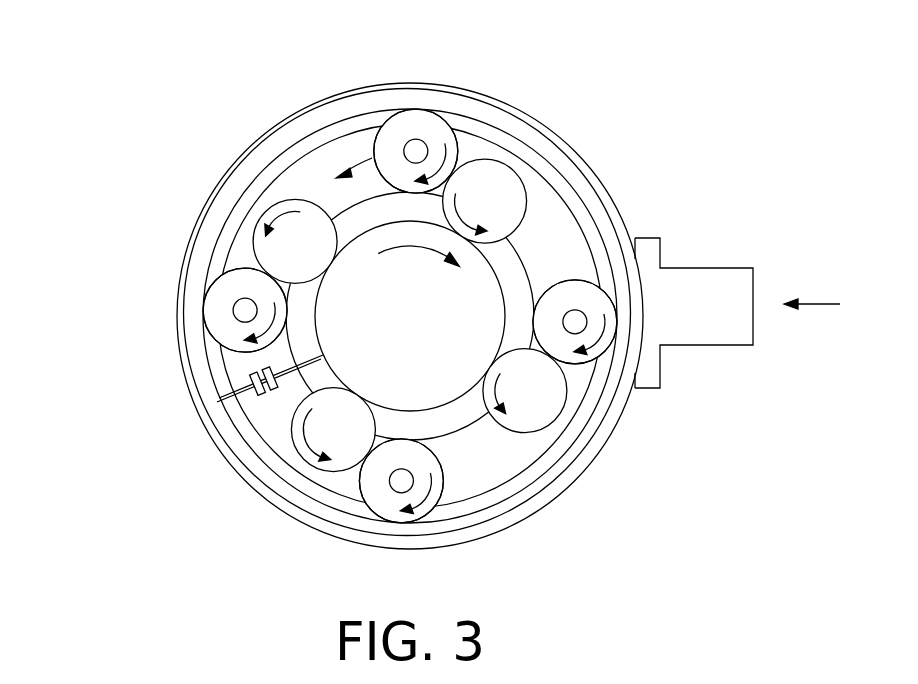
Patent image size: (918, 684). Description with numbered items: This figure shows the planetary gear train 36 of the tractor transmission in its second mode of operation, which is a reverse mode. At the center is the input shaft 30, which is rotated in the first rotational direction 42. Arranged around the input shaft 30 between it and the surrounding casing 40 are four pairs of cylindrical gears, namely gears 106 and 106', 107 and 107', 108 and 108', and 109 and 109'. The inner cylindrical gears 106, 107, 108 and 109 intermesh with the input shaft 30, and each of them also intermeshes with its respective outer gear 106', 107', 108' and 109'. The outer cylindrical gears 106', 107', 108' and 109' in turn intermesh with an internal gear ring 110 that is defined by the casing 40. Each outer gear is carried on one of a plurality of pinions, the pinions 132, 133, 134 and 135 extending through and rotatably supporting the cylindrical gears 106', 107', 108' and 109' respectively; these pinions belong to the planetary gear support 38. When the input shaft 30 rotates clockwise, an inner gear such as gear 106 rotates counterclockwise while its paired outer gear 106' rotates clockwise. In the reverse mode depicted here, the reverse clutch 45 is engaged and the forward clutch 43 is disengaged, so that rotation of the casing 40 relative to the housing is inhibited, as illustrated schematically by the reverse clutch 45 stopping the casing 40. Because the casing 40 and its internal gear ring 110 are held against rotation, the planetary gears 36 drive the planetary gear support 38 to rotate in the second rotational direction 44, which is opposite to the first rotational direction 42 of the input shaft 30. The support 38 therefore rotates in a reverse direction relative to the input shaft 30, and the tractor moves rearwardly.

The input shaft 30 is at (441, 307).
The planetary gear train 36 is at (461, 125).
The planetary gear support 38 is at (293, 190).
The casing 40 is at (570, 465).
The first rotational direction 42 is at (482, 252).
The forward clutch 43 is at (222, 397).
The second rotational direction 44 is at (372, 158).
The reverse clutch 45 is at (735, 278).
The cylindrical gear 106 is at (546, 179).
The cylindrical gear 106' is at (439, 113).
The cylindrical gear 107 is at (601, 408).
The cylindrical gear 107' is at (632, 275).
The cylindrical gear 108 is at (320, 473).
The cylindrical gear 108' is at (478, 496).
The cylindrical gear 109 is at (210, 224).
The cylindrical gear 109' is at (165, 310).
The internal gear ring 110 is at (232, 443).
The pinion 132 is at (416, 140).
The pinion 133 is at (586, 323).
The pinion 134 is at (404, 492).
The pinion 135 is at (237, 317).